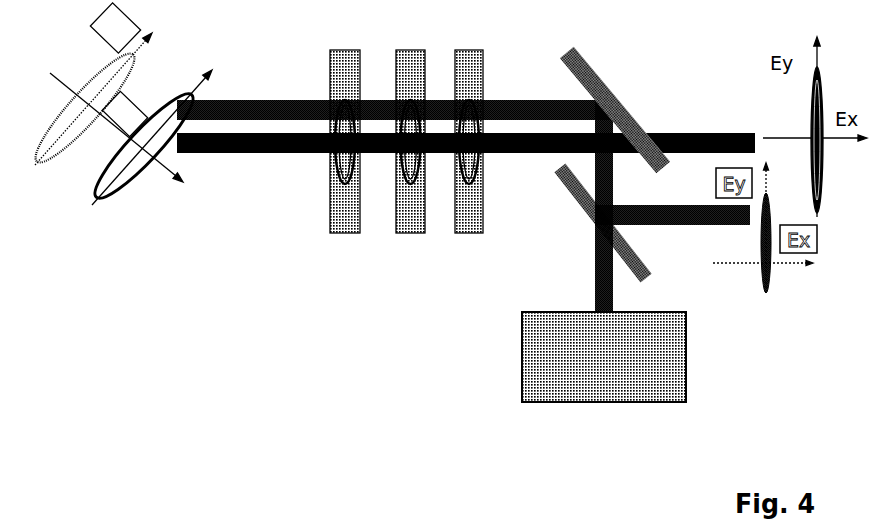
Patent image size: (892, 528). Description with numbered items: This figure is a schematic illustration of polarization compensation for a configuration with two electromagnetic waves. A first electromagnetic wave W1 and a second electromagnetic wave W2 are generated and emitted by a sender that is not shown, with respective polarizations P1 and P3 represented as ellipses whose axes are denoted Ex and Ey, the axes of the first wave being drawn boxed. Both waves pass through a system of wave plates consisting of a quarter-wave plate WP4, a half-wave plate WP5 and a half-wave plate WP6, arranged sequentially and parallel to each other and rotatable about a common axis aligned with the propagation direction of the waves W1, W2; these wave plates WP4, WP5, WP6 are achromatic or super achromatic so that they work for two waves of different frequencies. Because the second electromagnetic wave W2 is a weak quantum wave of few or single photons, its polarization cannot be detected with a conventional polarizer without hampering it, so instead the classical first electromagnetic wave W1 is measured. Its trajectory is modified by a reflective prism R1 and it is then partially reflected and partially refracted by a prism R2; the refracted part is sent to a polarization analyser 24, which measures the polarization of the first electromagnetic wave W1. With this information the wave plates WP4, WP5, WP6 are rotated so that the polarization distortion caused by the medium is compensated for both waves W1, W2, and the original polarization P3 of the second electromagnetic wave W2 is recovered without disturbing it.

The polarization of the first electromagnetic wave P1 is at (58, 168).
The polarization of the second electromagnetic wave P3 is at (125, 200).
The first electromagnetic wave W1 is at (242, 100).
The second electromagnetic wave W2 is at (223, 155).
The quarter-wave plate WP4 is at (347, 223).
The half-wave plate WP5 is at (412, 223).
The half-wave plate WP6 is at (470, 223).
The reflective prism R1 is at (601, 84).
The prism R2 is at (578, 196).
The polarization analyser 24 is at (522, 353).